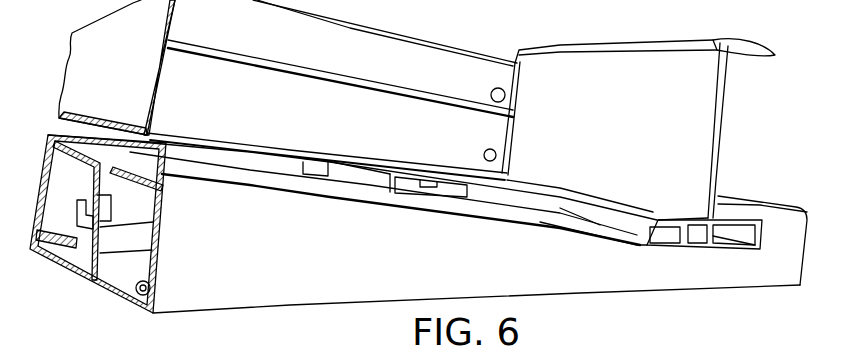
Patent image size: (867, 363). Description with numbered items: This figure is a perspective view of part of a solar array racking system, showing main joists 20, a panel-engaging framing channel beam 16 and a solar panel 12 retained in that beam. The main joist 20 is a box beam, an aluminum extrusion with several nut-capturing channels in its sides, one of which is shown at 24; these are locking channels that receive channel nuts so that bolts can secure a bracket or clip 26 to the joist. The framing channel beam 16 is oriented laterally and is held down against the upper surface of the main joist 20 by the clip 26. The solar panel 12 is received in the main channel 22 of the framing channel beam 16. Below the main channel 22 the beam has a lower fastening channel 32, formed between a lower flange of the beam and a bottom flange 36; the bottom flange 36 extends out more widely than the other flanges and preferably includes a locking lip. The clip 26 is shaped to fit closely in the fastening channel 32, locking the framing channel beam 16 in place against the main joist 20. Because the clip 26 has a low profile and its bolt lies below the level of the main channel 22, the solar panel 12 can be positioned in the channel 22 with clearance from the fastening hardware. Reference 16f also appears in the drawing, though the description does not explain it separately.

The solar panel 12 is at (258, 109).
The framing channel beam 16 is at (664, 123).
The panel flange 16f is at (640, 212).
The main joist 20 is at (230, 257).
The main channel 22 is at (600, 200).
The nut-capturing channel 24 is at (514, 33).
The clip 26 is at (296, 160).
The fastening channel 32 is at (613, 218).
The bottom flange 36 is at (677, 243).